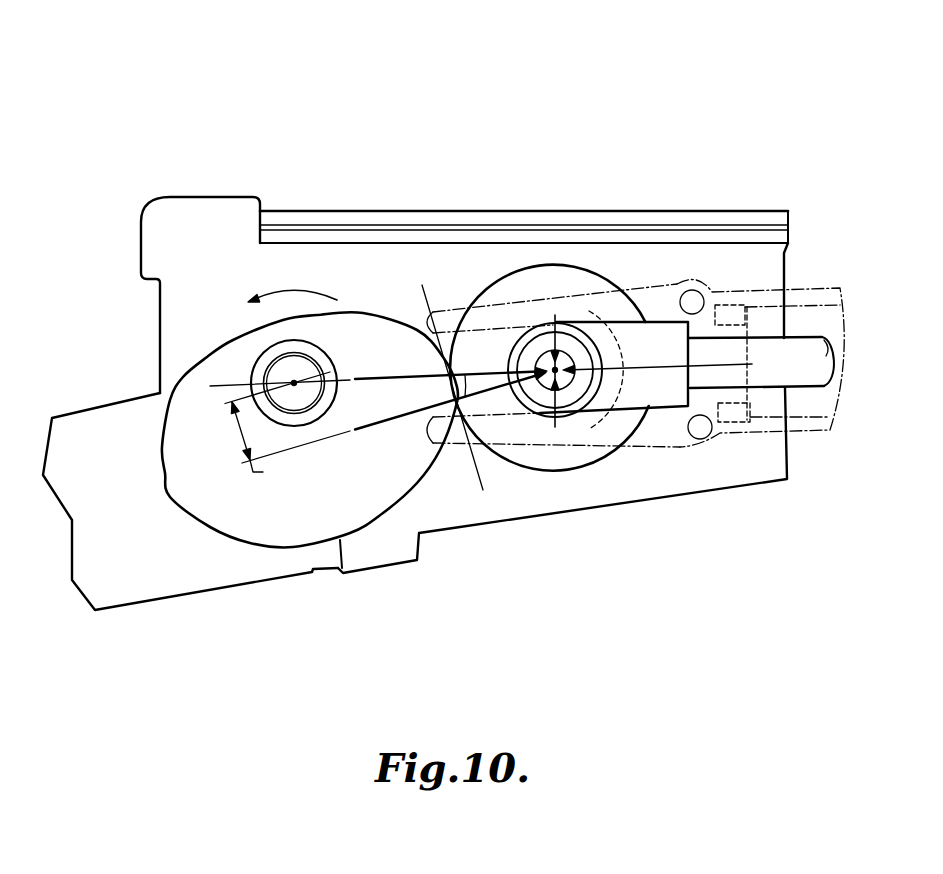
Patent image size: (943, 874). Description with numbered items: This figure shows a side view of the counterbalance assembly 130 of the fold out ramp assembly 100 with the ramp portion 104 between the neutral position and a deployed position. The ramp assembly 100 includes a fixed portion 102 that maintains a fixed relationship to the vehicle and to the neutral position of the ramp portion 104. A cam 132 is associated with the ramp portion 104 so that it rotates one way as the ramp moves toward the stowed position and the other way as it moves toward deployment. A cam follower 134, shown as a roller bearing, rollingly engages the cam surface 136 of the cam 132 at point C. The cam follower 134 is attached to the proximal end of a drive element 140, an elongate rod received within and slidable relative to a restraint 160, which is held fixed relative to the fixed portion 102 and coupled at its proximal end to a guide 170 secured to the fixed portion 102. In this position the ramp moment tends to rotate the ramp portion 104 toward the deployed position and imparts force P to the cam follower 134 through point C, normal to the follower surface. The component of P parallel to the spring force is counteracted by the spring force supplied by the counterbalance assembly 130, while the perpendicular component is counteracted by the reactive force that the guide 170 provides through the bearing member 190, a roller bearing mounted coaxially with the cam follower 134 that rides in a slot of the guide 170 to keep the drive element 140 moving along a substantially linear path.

The ramp assembly 100 is at (400, 88).
The fixed portion 102 is at (503, 210).
The ramp portion 104 is at (128, 610).
The counterbalance assembly 130 is at (727, 457).
The cam 132 is at (253, 546).
The cam follower 134 is at (570, 474).
The cam surface 136 is at (425, 318).
The drive element 140 is at (770, 392).
The restraint 160 is at (808, 288).
The guide 170 is at (640, 285).
The bearing member 190 is at (620, 412).